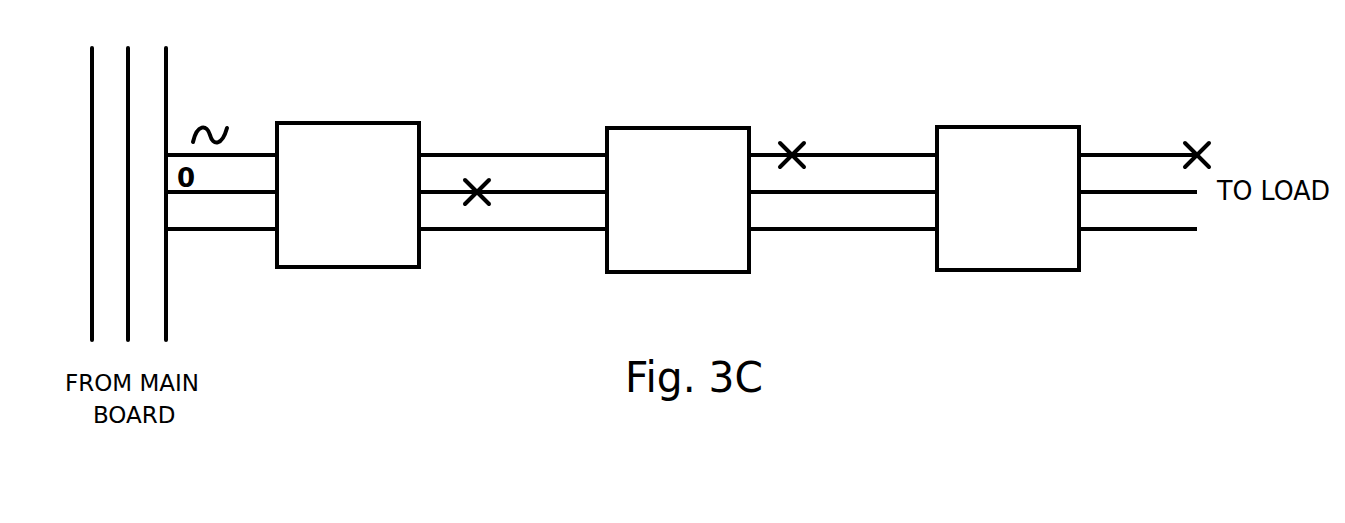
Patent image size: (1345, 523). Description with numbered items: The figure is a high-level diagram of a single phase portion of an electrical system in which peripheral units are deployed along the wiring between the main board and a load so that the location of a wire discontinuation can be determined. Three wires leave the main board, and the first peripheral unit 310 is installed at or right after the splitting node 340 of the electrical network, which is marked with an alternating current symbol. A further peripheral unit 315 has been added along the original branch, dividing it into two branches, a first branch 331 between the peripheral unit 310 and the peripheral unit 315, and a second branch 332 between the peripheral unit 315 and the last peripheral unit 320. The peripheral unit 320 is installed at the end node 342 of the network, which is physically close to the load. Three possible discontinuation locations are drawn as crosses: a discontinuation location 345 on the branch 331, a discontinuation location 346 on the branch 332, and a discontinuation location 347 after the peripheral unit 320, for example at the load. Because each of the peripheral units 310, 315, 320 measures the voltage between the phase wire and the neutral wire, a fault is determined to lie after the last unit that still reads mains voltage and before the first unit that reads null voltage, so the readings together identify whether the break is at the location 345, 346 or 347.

The splitting node 340 is at (168, 150).
The peripheral unit 310 is at (353, 122).
The branch 331 is at (503, 155).
The discontinuation location 345 is at (477, 190).
The peripheral unit 315 is at (682, 127).
The branch 332 is at (827, 155).
The discontinuation location 346 is at (792, 150).
The peripheral unit 320 is at (1012, 125).
The end node 342 is at (1082, 153).
The discontinuation location 347 is at (1197, 150).